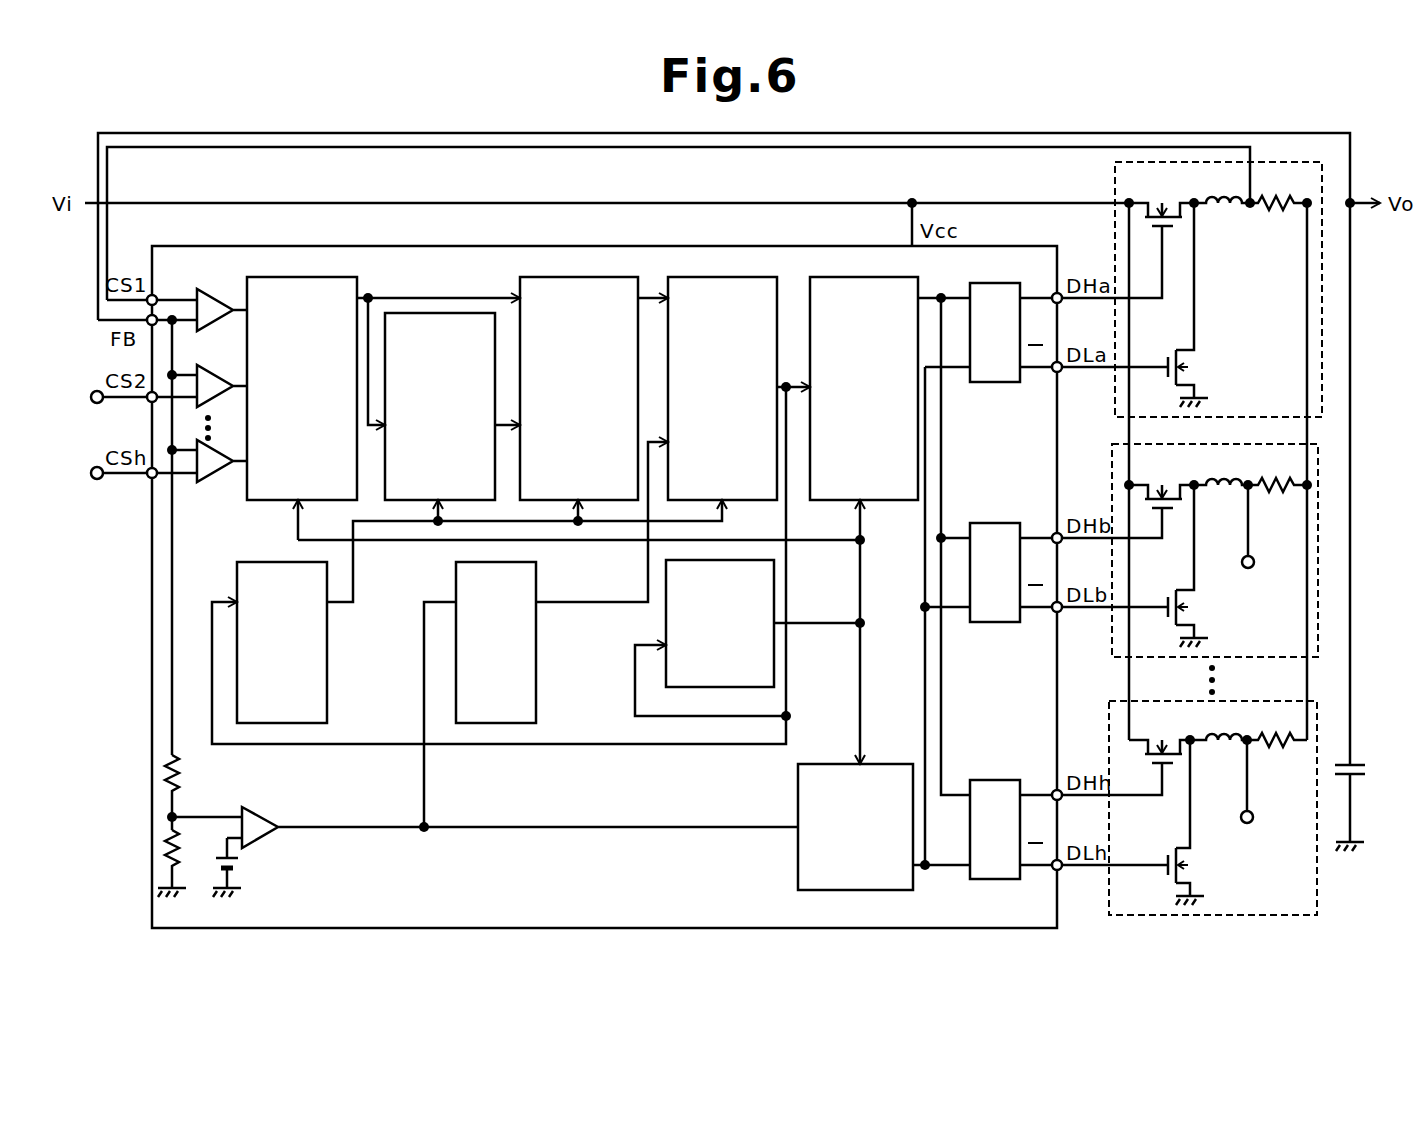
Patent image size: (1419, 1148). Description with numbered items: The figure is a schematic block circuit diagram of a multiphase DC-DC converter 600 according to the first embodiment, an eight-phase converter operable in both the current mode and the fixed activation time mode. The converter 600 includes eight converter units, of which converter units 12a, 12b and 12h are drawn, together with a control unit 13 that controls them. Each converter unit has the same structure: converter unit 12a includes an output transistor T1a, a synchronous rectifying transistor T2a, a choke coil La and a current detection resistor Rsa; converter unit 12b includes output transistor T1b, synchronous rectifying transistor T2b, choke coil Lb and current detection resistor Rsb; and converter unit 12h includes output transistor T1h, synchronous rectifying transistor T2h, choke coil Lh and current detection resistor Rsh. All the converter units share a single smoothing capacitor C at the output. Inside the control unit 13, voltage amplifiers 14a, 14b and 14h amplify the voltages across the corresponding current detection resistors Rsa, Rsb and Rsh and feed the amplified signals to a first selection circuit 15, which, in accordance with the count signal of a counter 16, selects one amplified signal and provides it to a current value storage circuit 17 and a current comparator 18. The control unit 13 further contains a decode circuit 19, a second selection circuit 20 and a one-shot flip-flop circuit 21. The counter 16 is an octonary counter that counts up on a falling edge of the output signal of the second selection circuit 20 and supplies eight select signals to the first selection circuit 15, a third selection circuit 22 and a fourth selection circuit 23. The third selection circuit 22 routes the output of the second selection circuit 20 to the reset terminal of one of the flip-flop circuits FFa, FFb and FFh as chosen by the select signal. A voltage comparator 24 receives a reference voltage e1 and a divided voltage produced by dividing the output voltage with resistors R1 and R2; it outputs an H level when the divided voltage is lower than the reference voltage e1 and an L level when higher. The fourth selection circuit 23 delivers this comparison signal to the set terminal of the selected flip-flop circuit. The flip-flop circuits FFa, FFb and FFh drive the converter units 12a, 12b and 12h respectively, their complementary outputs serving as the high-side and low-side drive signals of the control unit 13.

The multiphase DC-DC converter 600 is at (1360, 125).
The converter unit 12a is at (1231, 289).
The converter unit 12b is at (1230, 550).
The converter unit 12h is at (1227, 808).
The control unit 13 is at (1058, 909).
The voltage amplifier 14a is at (238, 283).
The voltage amplifier 14b is at (238, 359).
The voltage amplifier 14h is at (238, 488).
The first selection circuit 15 is at (290, 277).
The counter 16 is at (666, 624).
The current value storage circuit 17 is at (440, 313).
The current comparator 18 is at (572, 277).
The decode circuit 19 is at (248, 562).
The second selection circuit 20 is at (714, 277).
The one-shot flip-flop circuit 21 is at (536, 570).
The third selection circuit 22 is at (858, 277).
The fourth selection circuit 23 is at (797, 876).
The voltage comparator 24 is at (263, 807).
The resistor R1 is at (180, 786).
The resistor R2 is at (176, 862).
The reference voltage e1 is at (241, 867).
The smoothing capacitor C is at (1356, 763).
The flip-flop circuit FFa is at (1003, 327).
The flip-flop circuit FFb is at (1003, 567).
The flip-flop circuit FFh is at (1003, 825).
The output transistor T1a is at (1172, 203).
The synchronous rectifying transistor T2a is at (1186, 370).
The choke coil La is at (1227, 210).
The current detection resistor Rsa is at (1273, 210).
The output transistor T1b is at (1172, 485).
The synchronous rectifying transistor T2b is at (1186, 610).
The choke coil Lb is at (1227, 492).
The current detection resistor Rsb is at (1273, 492).
The output transistor T1h is at (1172, 740).
The synchronous rectifying transistor T2h is at (1186, 868).
The choke coil Lh is at (1227, 747).
The current detection resistor Rsh is at (1273, 747).